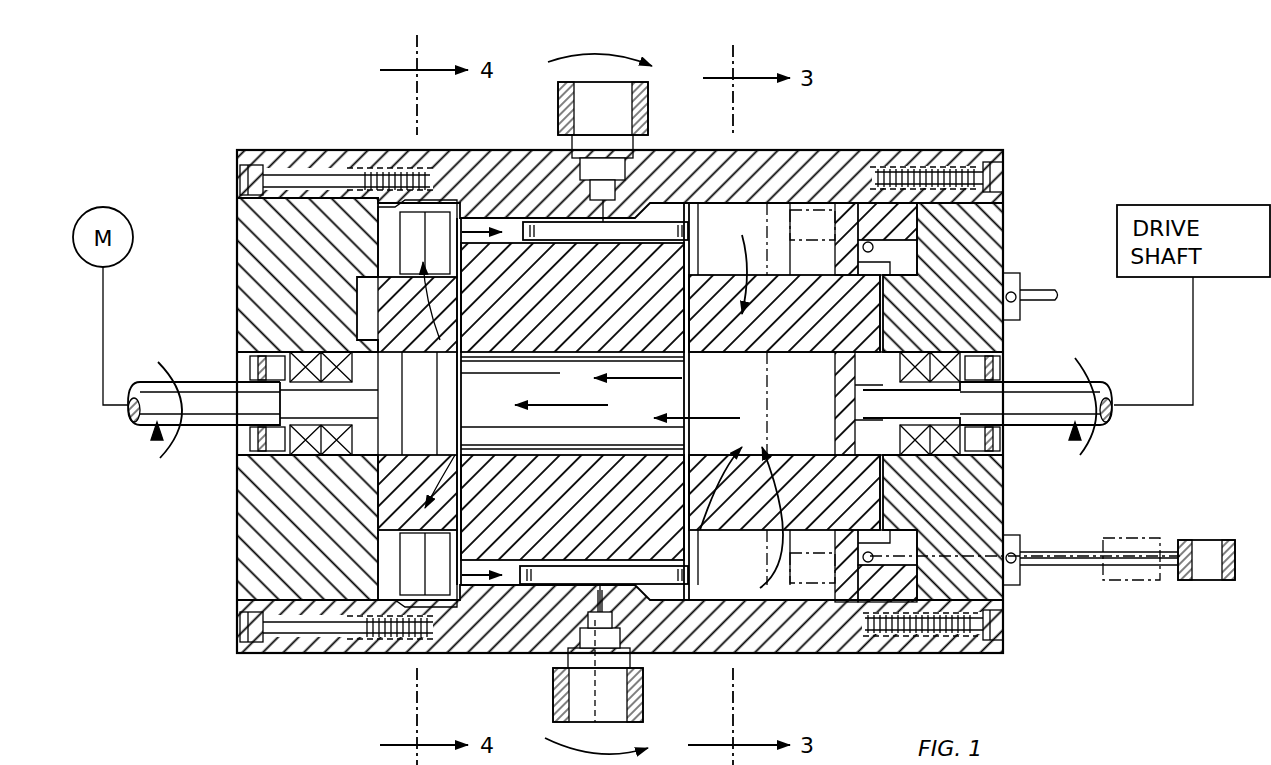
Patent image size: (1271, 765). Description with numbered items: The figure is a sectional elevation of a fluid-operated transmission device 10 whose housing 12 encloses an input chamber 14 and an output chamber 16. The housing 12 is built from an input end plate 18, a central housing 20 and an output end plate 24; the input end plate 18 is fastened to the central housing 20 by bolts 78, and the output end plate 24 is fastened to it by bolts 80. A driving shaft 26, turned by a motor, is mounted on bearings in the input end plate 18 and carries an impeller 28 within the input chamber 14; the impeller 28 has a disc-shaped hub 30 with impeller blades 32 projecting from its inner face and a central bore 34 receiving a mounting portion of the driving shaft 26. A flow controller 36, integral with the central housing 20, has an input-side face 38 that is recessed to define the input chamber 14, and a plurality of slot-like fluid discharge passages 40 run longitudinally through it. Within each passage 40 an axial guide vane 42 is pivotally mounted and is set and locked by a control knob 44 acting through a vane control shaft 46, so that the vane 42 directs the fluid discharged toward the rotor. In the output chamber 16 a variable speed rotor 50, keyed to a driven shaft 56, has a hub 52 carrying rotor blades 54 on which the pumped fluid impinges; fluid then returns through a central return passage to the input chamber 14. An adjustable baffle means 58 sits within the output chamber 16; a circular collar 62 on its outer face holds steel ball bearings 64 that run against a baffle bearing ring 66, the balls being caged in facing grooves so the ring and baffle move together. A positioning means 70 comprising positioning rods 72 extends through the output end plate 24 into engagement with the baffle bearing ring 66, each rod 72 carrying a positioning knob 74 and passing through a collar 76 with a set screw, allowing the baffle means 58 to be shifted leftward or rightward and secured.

The fluid-operated transmission device 10 is at (246, 149).
The housing 12 is at (775, 150).
The input chamber 14 is at (385, 400).
The output chamber 16 is at (722, 405).
The input end plate 18 is at (262, 522).
The central housing 20 is at (445, 165).
The output end plate 24 is at (1002, 332).
The driving shaft 26 is at (215, 388).
The impeller 28 is at (370, 293).
The hub 30 is at (378, 372).
The impeller blades 32 is at (400, 275).
The central bore 34 is at (356, 414).
The flow controller 36 is at (680, 307).
The input-side face 38 is at (452, 260).
The fluid discharge passages 40 is at (525, 222).
The axial guide vanes 42 is at (650, 600).
The control knobs 44 is at (650, 110).
The vane control shafts 46 is at (598, 212).
The variable speed rotor 50 is at (807, 442).
The hub 52 is at (845, 440).
The rotor blades 54 is at (784, 395).
The driven shaft 56 is at (1060, 388).
The adjustable baffle means 58 is at (832, 388).
The circular collar 62 is at (835, 262).
The steel ball bearing 64 is at (835, 232).
The baffle bearing ring 66 is at (870, 205).
The positioning means 70 is at (1088, 568).
The positioning rods 72 is at (1040, 296).
The positioning knob 74 is at (1200, 542).
The collar 76 is at (1015, 537).
The bolts 78 is at (290, 172).
The bolts 80 is at (932, 172).